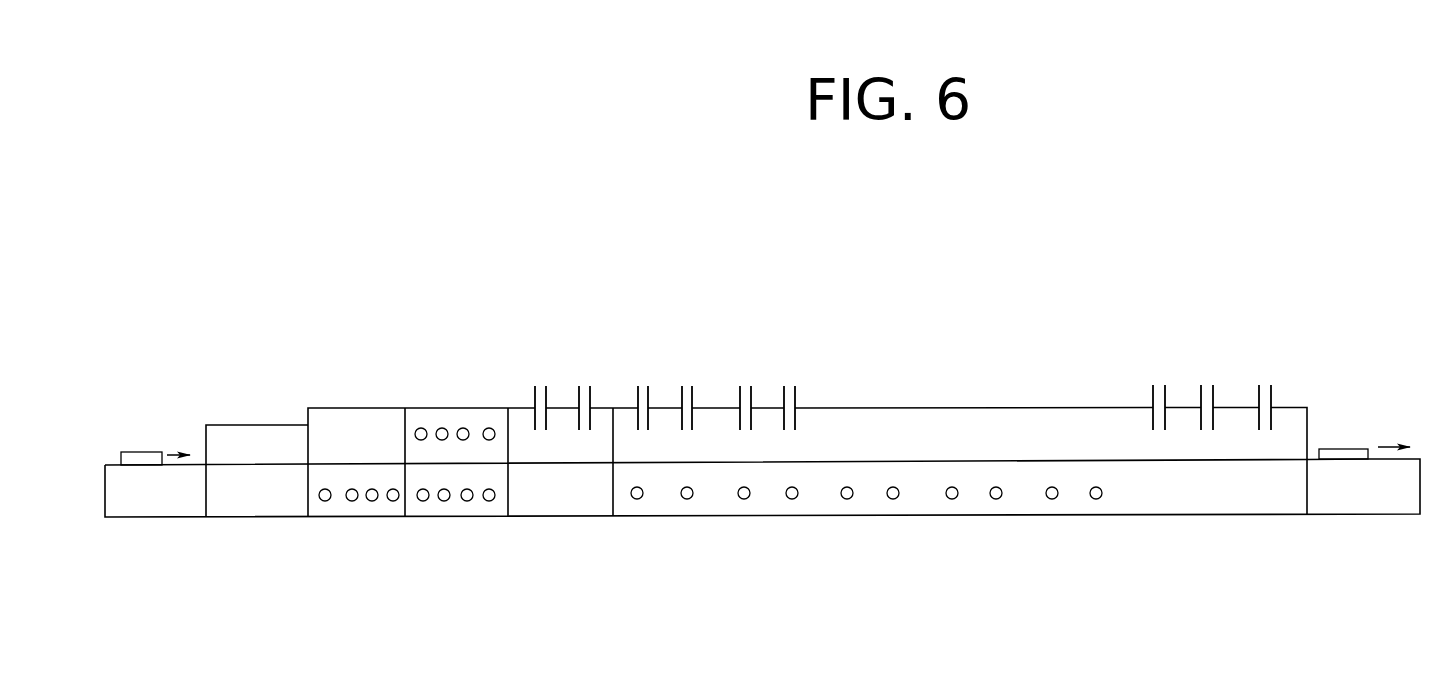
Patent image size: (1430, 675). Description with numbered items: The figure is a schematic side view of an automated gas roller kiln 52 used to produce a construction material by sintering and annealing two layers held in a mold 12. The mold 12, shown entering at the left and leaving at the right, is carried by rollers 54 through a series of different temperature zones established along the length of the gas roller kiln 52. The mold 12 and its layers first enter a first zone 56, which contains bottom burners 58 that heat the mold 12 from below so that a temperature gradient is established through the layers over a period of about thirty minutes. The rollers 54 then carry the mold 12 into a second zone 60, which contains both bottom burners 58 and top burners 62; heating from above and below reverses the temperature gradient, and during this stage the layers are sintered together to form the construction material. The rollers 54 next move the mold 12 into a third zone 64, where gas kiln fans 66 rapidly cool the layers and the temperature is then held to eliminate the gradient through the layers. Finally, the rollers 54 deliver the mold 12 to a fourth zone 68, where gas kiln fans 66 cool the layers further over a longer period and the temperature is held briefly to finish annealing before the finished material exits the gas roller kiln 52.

The mold 12 is at (140, 452).
The gas roller kiln 52 is at (334, 547).
The rollers 54 is at (266, 467).
The first zone 56 is at (347, 436).
The bottom burners 58 is at (330, 491).
The second zone 60 is at (450, 453).
The top burners 62 is at (466, 430).
The third zone 64 is at (553, 486).
The gas kiln fans 66 is at (590, 398).
The fourth zone 68 is at (850, 488).